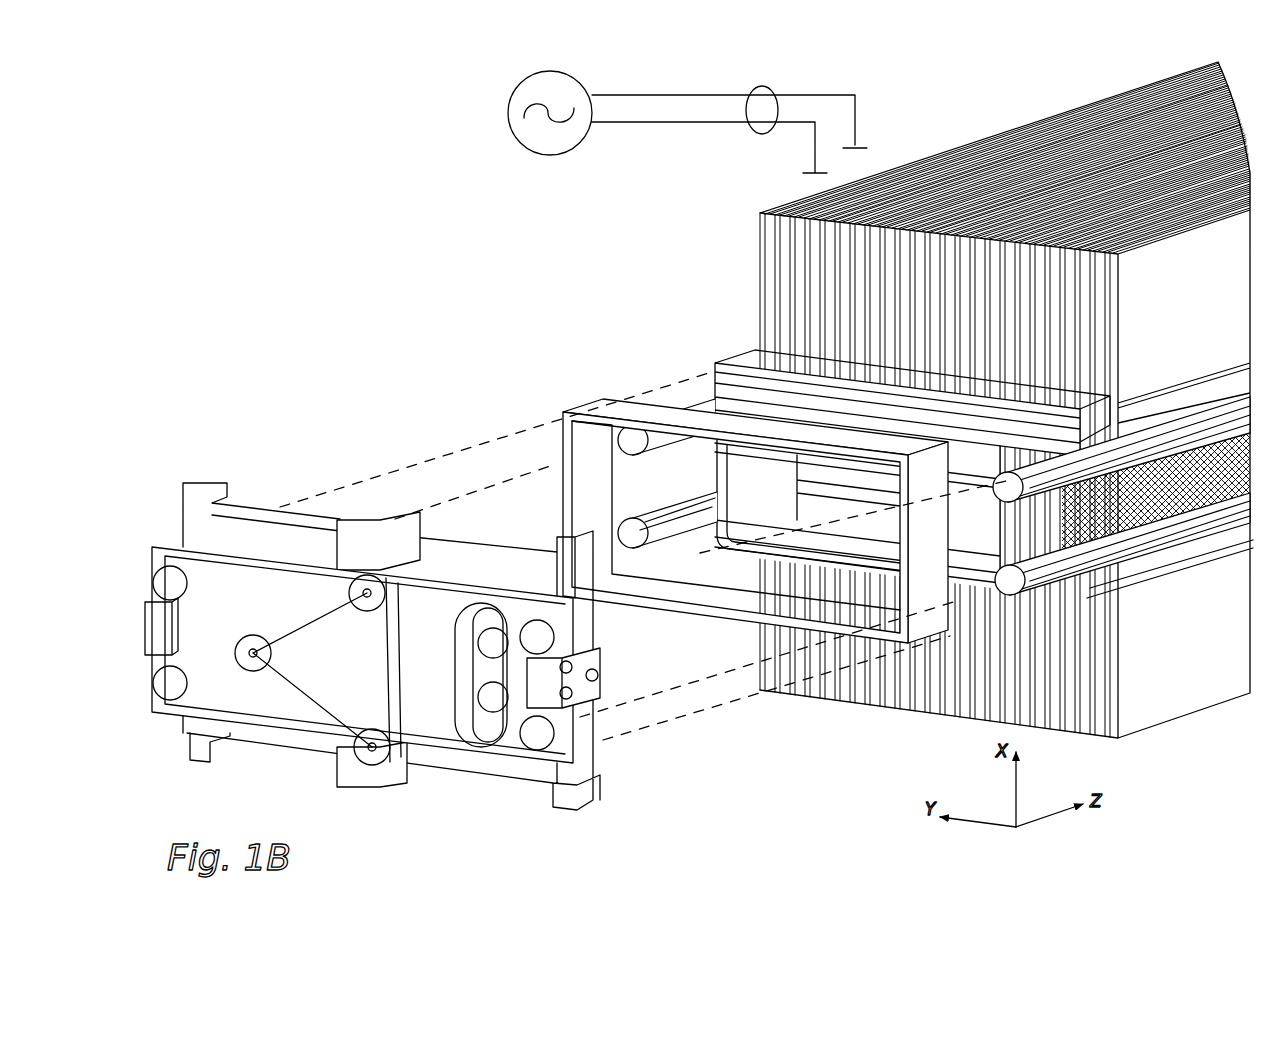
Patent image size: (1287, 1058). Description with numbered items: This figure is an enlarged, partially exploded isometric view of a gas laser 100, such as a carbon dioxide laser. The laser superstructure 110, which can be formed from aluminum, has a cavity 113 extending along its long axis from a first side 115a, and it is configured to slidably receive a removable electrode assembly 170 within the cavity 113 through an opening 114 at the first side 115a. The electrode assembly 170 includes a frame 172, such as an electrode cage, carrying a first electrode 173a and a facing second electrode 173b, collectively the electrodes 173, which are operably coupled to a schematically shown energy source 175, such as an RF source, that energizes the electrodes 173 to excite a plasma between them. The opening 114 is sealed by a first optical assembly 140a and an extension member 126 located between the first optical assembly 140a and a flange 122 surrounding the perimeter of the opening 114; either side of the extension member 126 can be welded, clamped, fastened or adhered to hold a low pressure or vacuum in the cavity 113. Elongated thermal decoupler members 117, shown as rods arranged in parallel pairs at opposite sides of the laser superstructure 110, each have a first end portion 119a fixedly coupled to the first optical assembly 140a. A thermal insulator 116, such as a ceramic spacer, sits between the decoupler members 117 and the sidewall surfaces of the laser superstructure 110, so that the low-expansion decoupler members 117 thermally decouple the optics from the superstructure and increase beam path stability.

The laser 100 is at (356, 168).
The laser superstructure 110 is at (1135, 588).
The cavity 113 is at (780, 484).
The opening 114 is at (793, 416).
The first side 115a is at (686, 356).
The thermal insulator 116 is at (1100, 523).
The thermal decoupler members 117 is at (700, 425).
The first end portion 119a is at (1012, 476).
The flange 122 is at (760, 385).
The extension member 126 is at (560, 410).
The first optical assembly 140a is at (487, 768).
The electrode assembly 170 is at (790, 520).
The frame 172 is at (858, 527).
The electrodes 173 is at (748, 150).
The first electrode 173a is at (850, 462).
The second electrode 173b is at (878, 490).
The energy source 175 is at (647, 130).